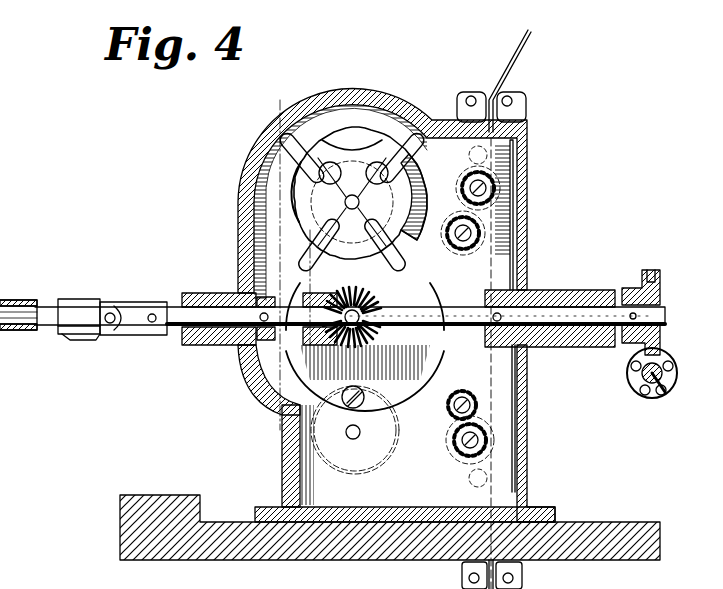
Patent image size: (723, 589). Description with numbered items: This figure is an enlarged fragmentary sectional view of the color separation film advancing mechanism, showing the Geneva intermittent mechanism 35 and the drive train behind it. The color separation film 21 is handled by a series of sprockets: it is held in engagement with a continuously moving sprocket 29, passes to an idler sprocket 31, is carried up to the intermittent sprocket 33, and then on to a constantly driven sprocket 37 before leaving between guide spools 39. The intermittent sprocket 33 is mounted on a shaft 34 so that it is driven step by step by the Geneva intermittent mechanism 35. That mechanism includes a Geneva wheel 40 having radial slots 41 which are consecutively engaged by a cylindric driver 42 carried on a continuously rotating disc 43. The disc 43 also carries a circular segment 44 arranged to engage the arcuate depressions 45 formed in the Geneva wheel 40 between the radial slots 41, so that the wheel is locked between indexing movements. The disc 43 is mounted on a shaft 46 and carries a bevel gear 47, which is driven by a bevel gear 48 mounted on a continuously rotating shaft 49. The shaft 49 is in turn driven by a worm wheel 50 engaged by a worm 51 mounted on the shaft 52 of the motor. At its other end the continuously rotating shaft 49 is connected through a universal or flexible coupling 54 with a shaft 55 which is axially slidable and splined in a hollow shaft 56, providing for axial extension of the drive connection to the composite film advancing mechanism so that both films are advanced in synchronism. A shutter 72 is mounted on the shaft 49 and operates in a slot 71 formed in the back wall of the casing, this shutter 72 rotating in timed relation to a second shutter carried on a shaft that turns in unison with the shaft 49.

The color separation film 21 is at (526, 34).
The continuously moving sprocket 29 is at (492, 440).
The idler sprocket 31 is at (292, 458).
The intermittent sprocket 33 is at (418, 113).
The shaft 34 is at (354, 197).
The Geneva intermittent mechanism 35 is at (343, 138).
The constantly driven sprocket 37 is at (523, 138).
The guide spools 39 is at (507, 90).
The Geneva wheel 40 is at (300, 185).
The radial slots 41 is at (283, 147).
The cylindric driver 42 is at (335, 404).
The continuously rotating disc 43 is at (296, 364).
The circular segment 44 is at (297, 244).
The arcuate depressions 45 is at (295, 210).
The shaft 46 is at (378, 310).
The bevel gear 47 is at (342, 271).
The bevel gear 48 is at (312, 346).
The continuously rotating shaft 49 is at (218, 304).
The worm wheel 50 is at (648, 285).
The worm 51 is at (636, 396).
The shaft of motor 52 is at (658, 396).
The universal or flexible coupling 54 is at (108, 305).
The shaft 55 is at (50, 310).
The hollow shaft 56 is at (12, 304).
The slot 71 is at (513, 178).
The shutter 72 is at (520, 235).